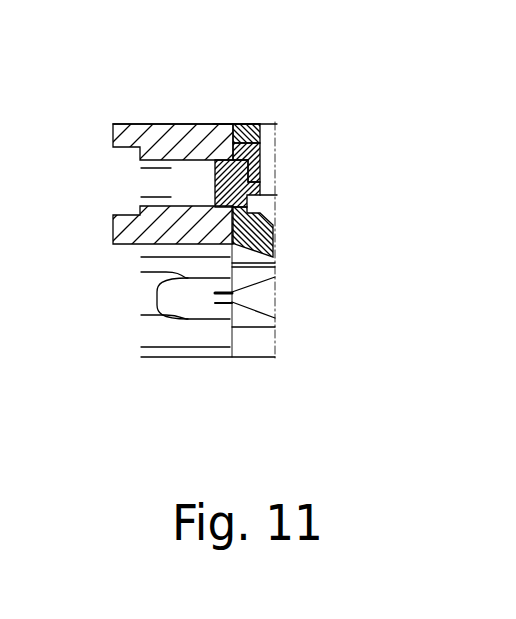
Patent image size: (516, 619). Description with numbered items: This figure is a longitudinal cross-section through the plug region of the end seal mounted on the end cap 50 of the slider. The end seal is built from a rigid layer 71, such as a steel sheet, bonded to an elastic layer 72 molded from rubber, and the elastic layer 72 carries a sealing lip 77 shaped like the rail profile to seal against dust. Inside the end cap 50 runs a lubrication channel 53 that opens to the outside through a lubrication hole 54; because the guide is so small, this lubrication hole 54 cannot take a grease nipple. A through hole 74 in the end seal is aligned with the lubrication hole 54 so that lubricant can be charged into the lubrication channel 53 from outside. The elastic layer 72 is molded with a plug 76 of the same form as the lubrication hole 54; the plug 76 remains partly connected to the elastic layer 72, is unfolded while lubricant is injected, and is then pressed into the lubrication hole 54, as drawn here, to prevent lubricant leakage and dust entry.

The end cap 50 is at (160, 124).
The lubrication channel 53 is at (157, 184).
The lubrication hole 54 is at (188, 186).
The rigid layer 71 is at (234, 123).
The elastic layer 72 is at (254, 123).
The through hole 74 is at (240, 152).
The plug 76 is at (262, 182).
The sealing lip 77 is at (273, 242).